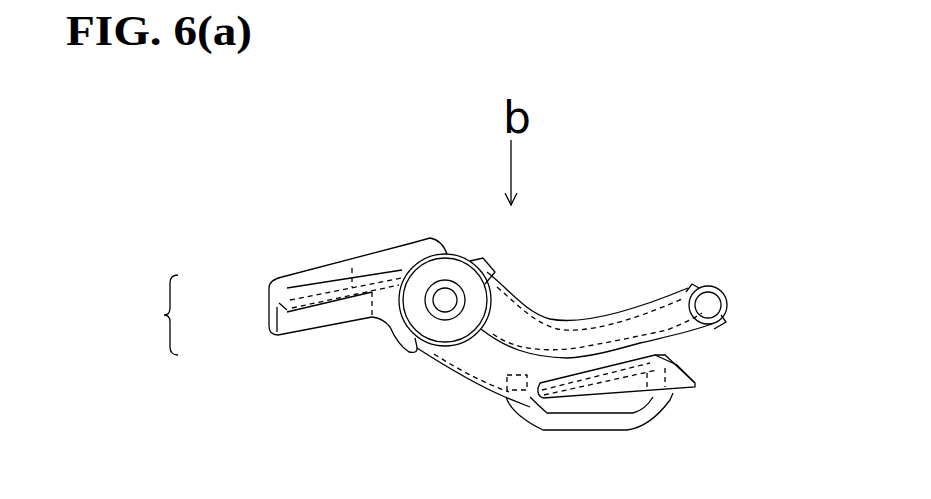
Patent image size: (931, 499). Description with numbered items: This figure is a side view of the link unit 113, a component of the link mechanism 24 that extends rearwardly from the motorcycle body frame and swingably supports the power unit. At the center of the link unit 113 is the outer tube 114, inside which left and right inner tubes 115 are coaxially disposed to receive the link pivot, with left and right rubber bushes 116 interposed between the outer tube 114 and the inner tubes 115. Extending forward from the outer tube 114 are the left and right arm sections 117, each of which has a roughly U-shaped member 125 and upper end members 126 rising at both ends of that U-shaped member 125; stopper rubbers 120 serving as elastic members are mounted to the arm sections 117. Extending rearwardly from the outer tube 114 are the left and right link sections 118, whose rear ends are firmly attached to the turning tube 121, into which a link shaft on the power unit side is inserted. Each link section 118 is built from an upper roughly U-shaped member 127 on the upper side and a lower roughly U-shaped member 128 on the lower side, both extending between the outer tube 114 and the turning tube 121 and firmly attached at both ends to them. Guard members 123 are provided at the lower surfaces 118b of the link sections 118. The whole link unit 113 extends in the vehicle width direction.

The link mechanism 24 is at (563, 178).
The link unit 113 is at (553, 242).
The outer tube 114 is at (458, 256).
The inner tube 115 is at (443, 285).
The rubber bush 116 is at (473, 256).
The arm section 117 is at (164, 315).
The link section 118 is at (606, 312).
The lower surface of link section 118b is at (502, 397).
The stopper rubber 120 is at (285, 280).
The turning tube 121 is at (713, 285).
The guard member 123 is at (638, 415).
The roughly U-shaped member 125 is at (315, 318).
The upper end member 126 is at (294, 300).
The upper roughly U-shaped member 127 is at (655, 315).
The lower roughly U-shaped member 128 is at (687, 343).